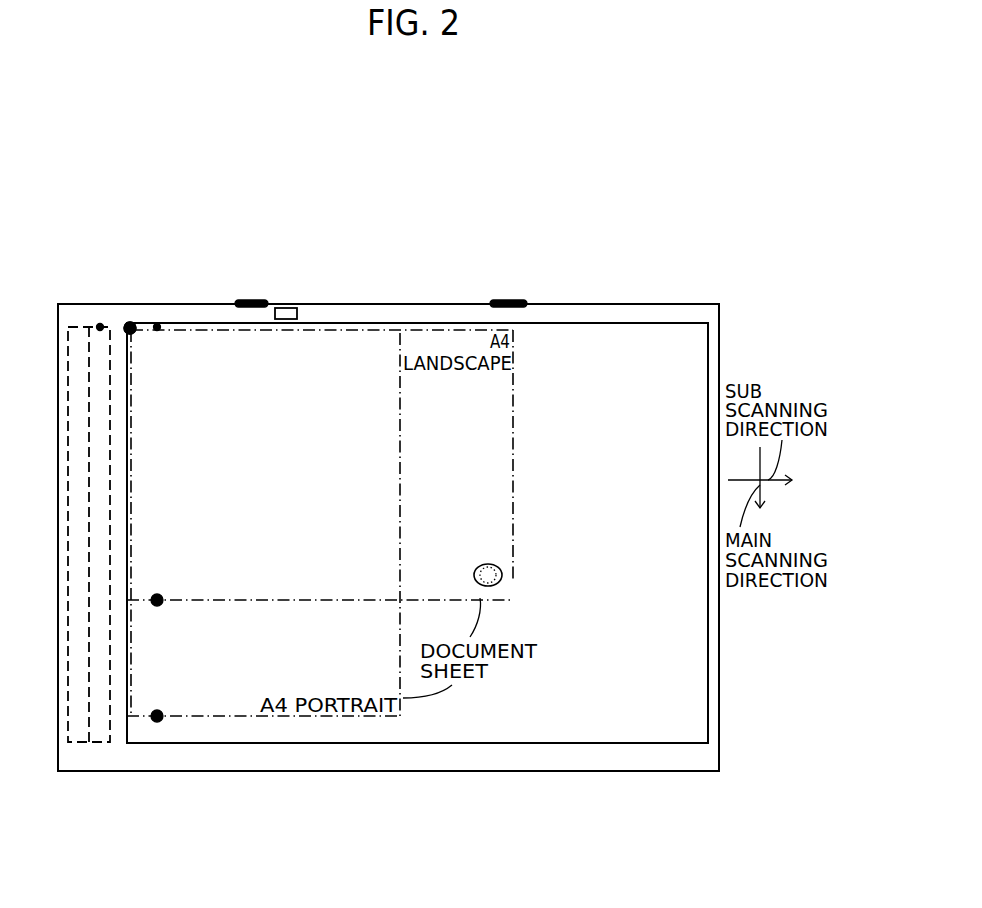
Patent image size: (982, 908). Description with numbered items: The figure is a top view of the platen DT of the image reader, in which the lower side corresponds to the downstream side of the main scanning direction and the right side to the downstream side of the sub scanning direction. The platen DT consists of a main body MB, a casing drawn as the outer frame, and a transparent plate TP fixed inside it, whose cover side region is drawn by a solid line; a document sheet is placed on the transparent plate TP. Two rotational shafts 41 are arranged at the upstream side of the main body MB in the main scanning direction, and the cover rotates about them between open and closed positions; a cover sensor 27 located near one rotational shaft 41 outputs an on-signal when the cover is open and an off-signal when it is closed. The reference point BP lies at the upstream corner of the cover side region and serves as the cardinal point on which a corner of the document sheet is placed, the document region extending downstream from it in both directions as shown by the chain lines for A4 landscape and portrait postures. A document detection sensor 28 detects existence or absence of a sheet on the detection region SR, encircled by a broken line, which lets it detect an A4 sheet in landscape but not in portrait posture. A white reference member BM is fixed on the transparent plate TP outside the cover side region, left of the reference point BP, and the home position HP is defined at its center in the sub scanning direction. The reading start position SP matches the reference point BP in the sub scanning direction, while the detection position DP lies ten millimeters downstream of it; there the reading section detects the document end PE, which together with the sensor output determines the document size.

The rotational shaft 41 is at (520, 273).
The cover sensor 27 is at (284, 308).
The document detection sensor 28 is at (503, 573).
The home position HP is at (97, 325).
The reading start position SP is at (129, 326).
The reference point BP is at (132, 326).
The detection position DP is at (158, 326).
The platen DT is at (810, 166).
The transparent plate TP is at (558, 350).
The main body MB is at (688, 303).
The reference member BM is at (100, 732).
The document end PE is at (160, 597).
The detection region SR is at (494, 581).